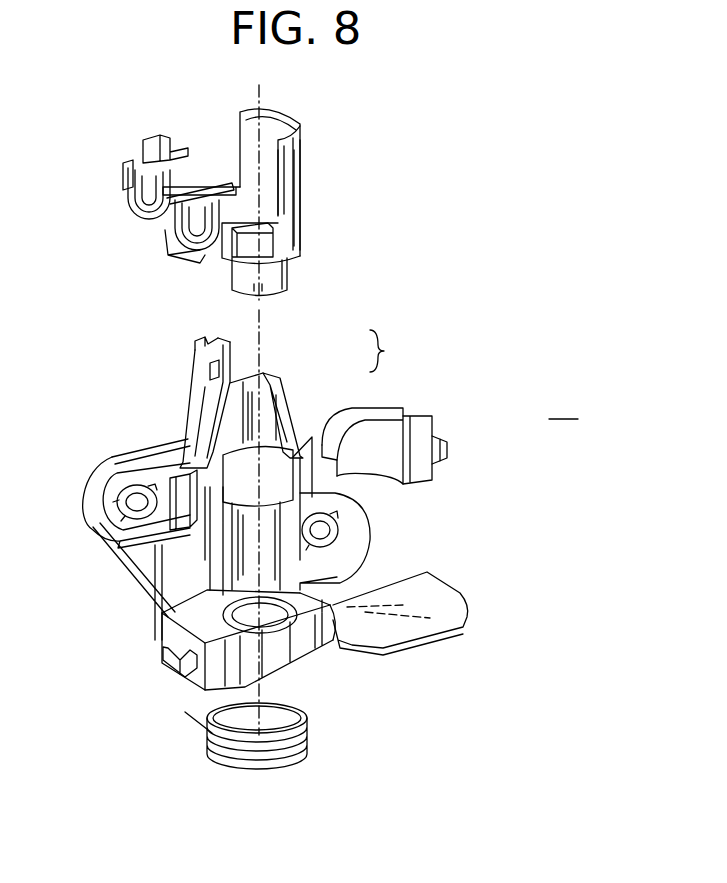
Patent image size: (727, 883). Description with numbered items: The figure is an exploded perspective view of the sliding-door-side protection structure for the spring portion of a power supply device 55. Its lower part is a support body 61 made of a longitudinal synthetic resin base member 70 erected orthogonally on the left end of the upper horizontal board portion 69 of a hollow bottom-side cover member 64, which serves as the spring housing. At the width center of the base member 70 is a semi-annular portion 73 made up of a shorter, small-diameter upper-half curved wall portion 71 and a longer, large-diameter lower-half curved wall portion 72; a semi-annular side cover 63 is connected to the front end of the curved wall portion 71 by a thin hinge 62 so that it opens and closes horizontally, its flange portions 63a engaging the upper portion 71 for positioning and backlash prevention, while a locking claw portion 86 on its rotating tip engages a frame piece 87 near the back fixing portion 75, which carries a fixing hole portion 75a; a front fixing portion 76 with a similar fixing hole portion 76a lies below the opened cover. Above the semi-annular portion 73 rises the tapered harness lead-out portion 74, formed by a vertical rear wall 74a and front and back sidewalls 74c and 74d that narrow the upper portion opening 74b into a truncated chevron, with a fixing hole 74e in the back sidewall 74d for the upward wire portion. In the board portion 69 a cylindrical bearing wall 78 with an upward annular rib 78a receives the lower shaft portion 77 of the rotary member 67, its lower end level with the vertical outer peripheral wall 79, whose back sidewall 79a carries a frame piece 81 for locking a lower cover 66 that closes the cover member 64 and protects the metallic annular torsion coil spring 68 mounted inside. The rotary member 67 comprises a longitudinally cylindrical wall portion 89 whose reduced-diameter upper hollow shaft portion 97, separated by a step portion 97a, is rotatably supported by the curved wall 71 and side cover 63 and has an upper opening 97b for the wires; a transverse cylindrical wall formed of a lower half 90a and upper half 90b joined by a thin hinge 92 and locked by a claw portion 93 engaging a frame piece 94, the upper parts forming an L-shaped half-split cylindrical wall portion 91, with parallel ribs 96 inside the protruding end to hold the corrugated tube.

The power supply device 55 is at (565, 407).
The support body 61 is at (460, 489).
The thin hinge 62 is at (268, 515).
The side cover 63 is at (396, 404).
The flange portions 63a is at (432, 416).
The cover member 64 is at (337, 594).
The lower cover 66 is at (440, 637).
The rotary member 67 is at (318, 187).
The annular torsion coil spring 68 is at (320, 743).
The board portion 69 is at (335, 655).
The base member 70 is at (149, 431).
The upper-half small diameter curved wall portion 71 is at (270, 523).
The lower-half large diameter curved wall portion 72 is at (293, 470).
The semi-annular portion 73 is at (393, 351).
The harness lead-out portion 74 is at (197, 417).
The rear wall 74a is at (250, 382).
The upper portion opening 74b is at (225, 338).
The front sidewall 74c is at (285, 458).
The back sidewall 74d is at (205, 398).
The fixing hole 74e is at (210, 372).
The back fixing portion 75 is at (112, 470).
The fixing hole portion 75a is at (122, 492).
The front fixing portion 76 is at (340, 513).
The fixing hole portion 76a is at (352, 535).
The lower shaft portion 77 is at (290, 274).
The bearing wall 78 is at (205, 688).
The annular rib 78a is at (167, 630).
The outer peripheral wall 79 is at (296, 668).
The back sidewall 79a is at (185, 642).
The frame piece 81 is at (165, 665).
The locking claw portion 86 is at (450, 447).
The frame piece 87 is at (168, 519).
The longitudinally cylindrical wall portion 89 is at (300, 238).
The lower half 90a is at (172, 260).
The upper half 90b is at (128, 196).
The half-split cylindrical wall portion 91 is at (196, 152).
The thin hinge 92 is at (212, 182).
The locking claw portion 93 is at (165, 142).
The frame piece 94 is at (282, 225).
The ribs 96 is at (126, 170).
The upper hollow shaft portion 97 is at (302, 132).
The step portion 97a is at (305, 150).
The upper opening 97b is at (274, 120).